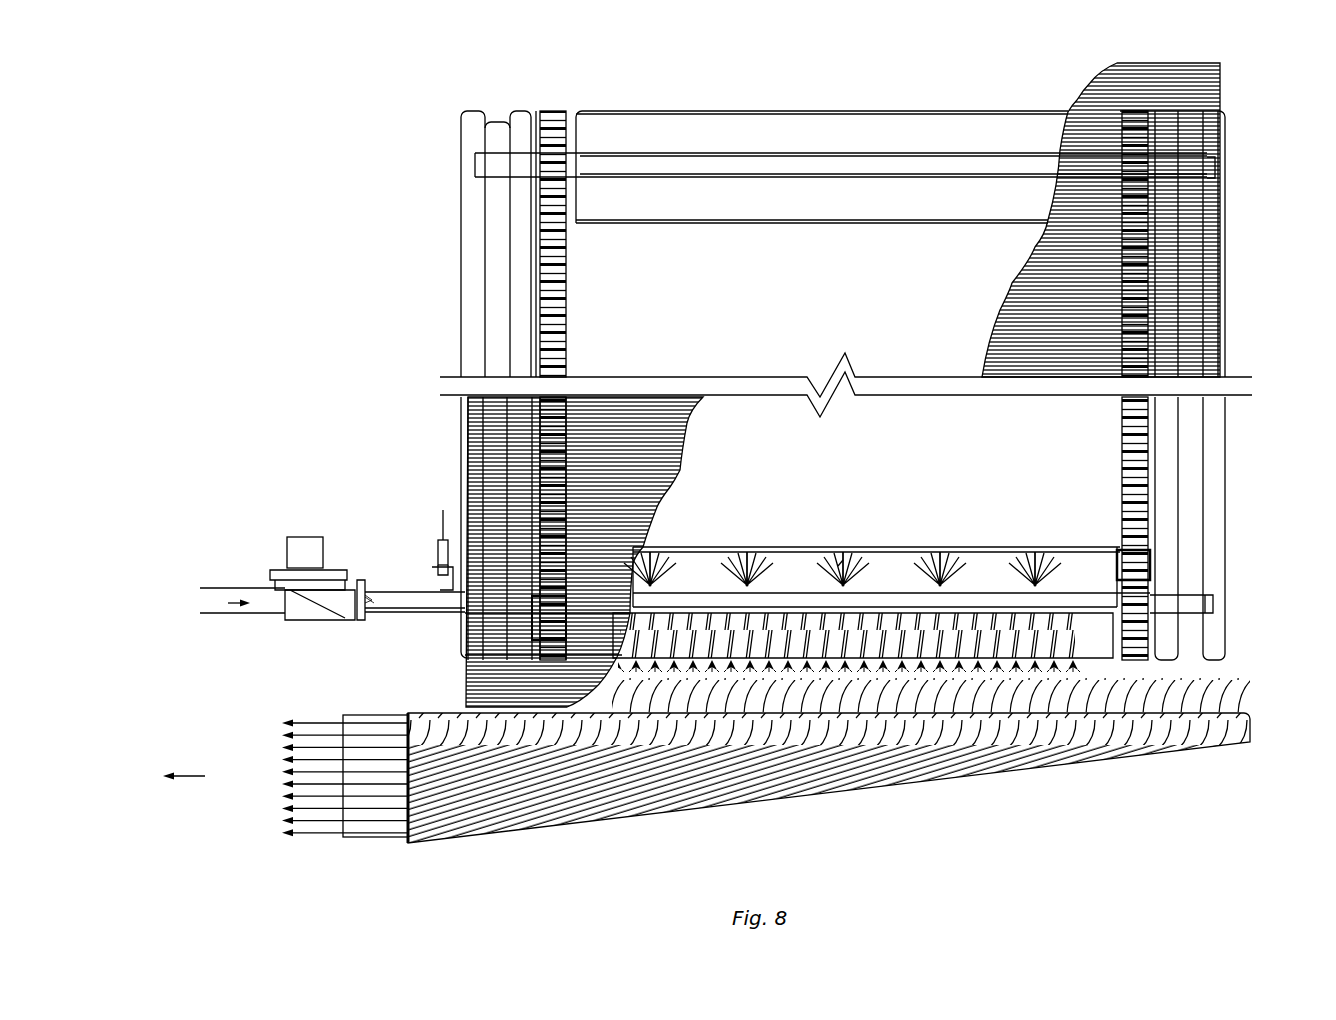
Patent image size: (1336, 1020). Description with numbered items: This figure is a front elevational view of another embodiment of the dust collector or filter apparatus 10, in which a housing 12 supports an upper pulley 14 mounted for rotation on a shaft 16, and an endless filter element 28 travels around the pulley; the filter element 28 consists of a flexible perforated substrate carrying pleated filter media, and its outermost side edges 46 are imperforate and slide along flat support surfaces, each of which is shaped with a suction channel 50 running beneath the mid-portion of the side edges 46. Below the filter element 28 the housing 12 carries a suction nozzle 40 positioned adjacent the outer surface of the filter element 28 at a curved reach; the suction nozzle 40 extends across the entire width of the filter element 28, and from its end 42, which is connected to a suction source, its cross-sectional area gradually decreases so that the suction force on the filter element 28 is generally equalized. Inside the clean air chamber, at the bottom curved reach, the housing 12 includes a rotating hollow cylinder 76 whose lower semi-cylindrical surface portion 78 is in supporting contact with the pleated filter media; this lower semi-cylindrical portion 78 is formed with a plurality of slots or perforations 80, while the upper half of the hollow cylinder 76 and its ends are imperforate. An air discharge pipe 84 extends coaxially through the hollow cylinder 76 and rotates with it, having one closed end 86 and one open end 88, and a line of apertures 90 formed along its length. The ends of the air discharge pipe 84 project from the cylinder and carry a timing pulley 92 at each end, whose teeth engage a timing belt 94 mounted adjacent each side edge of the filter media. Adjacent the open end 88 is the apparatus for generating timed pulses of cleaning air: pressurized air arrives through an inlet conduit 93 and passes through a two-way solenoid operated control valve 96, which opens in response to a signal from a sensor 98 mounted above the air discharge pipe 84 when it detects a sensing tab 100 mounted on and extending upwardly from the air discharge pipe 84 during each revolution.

The filter apparatus 10 is at (432, 262).
The housing 12 is at (468, 215).
The upper pulley 14 is at (790, 210).
The shaft 16 is at (640, 172).
The filter element 28 is at (1212, 325).
The suction nozzle 40 is at (900, 775).
The end of suction nozzle 42 is at (385, 718).
The side edges 46 is at (1222, 93).
The suction channel 50 is at (497, 108).
The hollow cylinder 76 is at (1010, 552).
The lower semi-cylindrical surface portion 78 is at (1100, 640).
The slots or perforations 80 is at (1070, 650).
The air discharge pipe 84 is at (905, 560).
The closed end 86 is at (1213, 603).
The open end 88 is at (365, 615).
The apertures 90 is at (843, 560).
The timing pulley 92 is at (1150, 580).
The inlet conduit 93 is at (225, 592).
The timing belt 94 is at (556, 283).
The control valve 96 is at (307, 548).
The sensor 98 is at (440, 548).
The sensing tab 100 is at (440, 580).